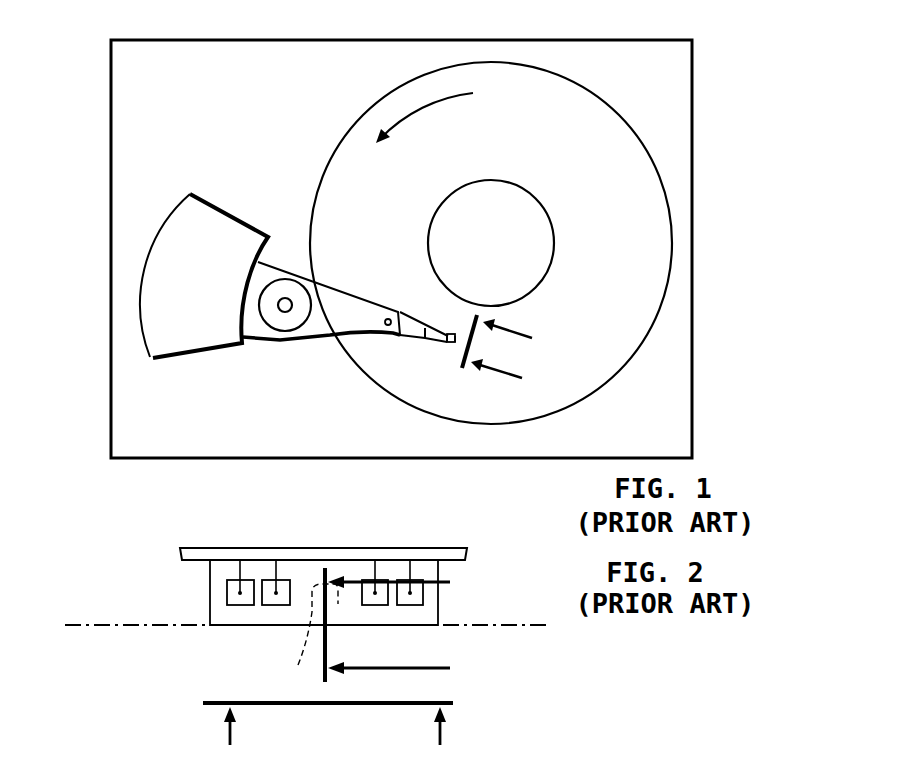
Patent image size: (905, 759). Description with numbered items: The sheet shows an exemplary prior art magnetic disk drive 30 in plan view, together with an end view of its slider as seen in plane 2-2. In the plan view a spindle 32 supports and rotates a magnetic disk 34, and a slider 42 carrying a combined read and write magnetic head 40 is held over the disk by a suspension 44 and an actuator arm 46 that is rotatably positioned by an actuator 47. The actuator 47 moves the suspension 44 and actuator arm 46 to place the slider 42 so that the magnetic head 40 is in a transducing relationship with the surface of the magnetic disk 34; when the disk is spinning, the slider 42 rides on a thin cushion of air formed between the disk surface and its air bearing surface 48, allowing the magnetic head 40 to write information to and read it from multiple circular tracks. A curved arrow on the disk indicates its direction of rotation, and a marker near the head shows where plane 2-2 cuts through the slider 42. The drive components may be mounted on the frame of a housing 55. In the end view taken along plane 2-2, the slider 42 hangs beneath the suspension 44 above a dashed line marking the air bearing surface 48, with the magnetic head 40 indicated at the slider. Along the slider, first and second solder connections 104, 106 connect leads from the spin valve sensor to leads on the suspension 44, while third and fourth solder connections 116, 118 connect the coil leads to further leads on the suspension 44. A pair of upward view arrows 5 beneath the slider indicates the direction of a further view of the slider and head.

In FIG. 1, the magnetic disk drive 30 is at (706, 45).
In FIG. 1, the spindle 32 is at (515, 184).
In FIG. 1, the magnetic disk 34 is at (607, 242).
In FIG. 1, the magnetic head 40 is at (450, 342).
In FIG. 2, the magnetic head 40 is at (300, 631).
In FIG. 1, the slider 42 is at (449, 334).
In FIG. 2, the slider 42 is at (210, 590).
In FIG. 1, the suspension 44 is at (410, 337).
In FIG. 1, the actuator arm 46 is at (328, 283).
In FIG. 1, the actuator 47 is at (225, 210).
In FIG. 2, the air bearing surface 48 is at (105, 627).
In FIG. 2, the housing 55 is at (612, 758).
In FIG. 2, the first solder connection 104 is at (227, 585).
In FIG. 2, the second solder connection 106 is at (392, 582).
In FIG. 2, the third solder connection 116 is at (262, 582).
In FIG. 2, the fourth solder connection 118 is at (360, 580).
In FIG. 1, the plane 2- 2 is at (506, 354).
In FIG. 2, the view arrows 5 is at (328, 731).